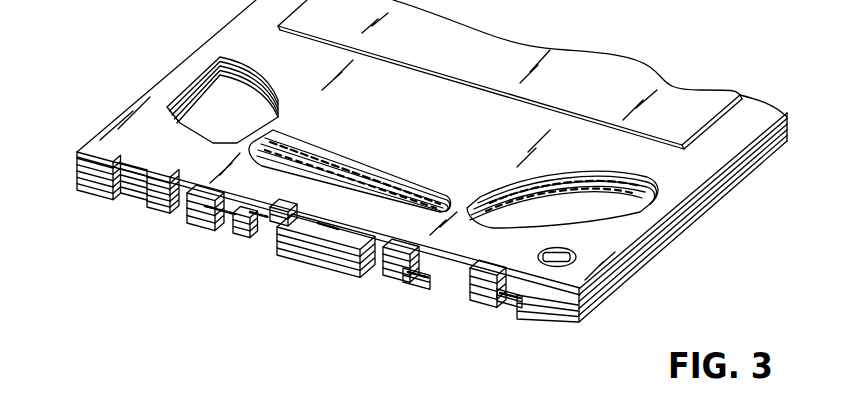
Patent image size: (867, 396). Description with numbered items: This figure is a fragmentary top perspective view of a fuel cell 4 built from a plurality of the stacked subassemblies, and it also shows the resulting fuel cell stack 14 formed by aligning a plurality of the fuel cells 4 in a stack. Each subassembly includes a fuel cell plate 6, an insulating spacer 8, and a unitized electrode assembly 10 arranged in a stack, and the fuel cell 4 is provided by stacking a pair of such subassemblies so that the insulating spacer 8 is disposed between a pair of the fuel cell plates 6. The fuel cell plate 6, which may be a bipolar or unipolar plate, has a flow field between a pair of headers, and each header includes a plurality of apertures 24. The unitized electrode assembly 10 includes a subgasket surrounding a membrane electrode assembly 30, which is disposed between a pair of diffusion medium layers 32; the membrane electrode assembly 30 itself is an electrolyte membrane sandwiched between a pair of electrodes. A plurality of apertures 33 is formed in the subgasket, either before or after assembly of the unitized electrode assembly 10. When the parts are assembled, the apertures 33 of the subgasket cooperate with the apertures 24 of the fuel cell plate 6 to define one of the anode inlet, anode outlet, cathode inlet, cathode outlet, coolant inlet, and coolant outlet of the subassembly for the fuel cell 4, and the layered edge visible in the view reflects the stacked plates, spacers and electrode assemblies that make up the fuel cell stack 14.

The fuel cell 4 is at (612, 293).
The fuel cell plate 6 is at (274, 212).
The insulating spacer 8 is at (303, 222).
The unitized electrode assembly 10 is at (509, 136).
The fuel cell stack 14 is at (95, 113).
The apertures 24 is at (353, 188).
The membrane electrode assembly 30 is at (607, 88).
The diffusion medium layers 32 is at (462, 63).
The apertures 33 is at (377, 108).